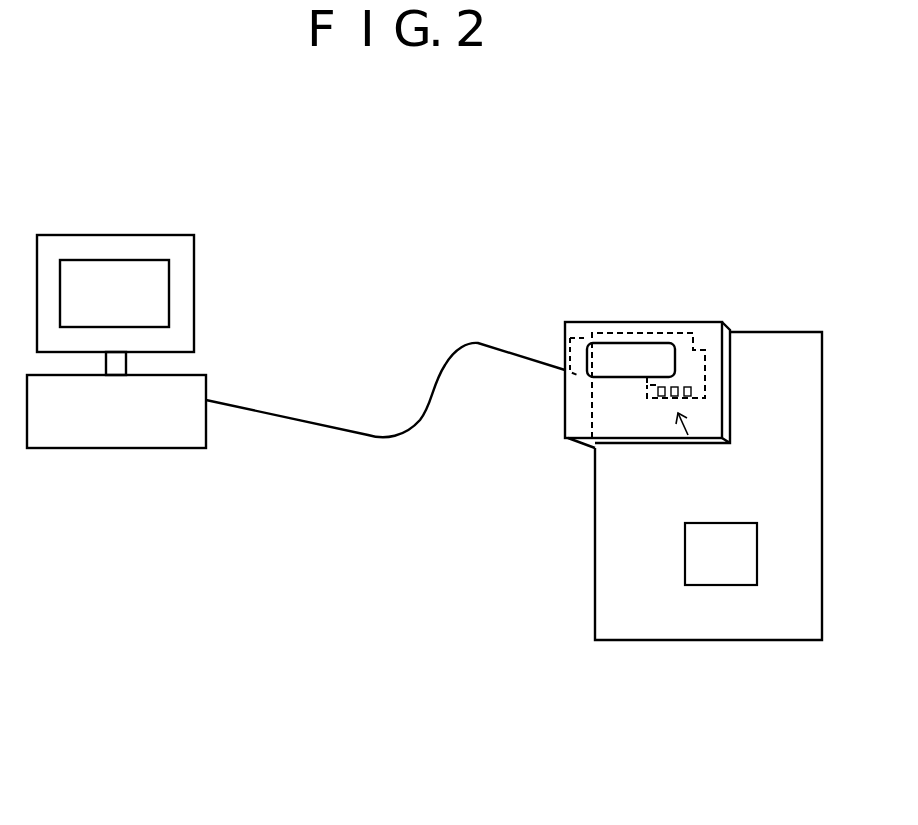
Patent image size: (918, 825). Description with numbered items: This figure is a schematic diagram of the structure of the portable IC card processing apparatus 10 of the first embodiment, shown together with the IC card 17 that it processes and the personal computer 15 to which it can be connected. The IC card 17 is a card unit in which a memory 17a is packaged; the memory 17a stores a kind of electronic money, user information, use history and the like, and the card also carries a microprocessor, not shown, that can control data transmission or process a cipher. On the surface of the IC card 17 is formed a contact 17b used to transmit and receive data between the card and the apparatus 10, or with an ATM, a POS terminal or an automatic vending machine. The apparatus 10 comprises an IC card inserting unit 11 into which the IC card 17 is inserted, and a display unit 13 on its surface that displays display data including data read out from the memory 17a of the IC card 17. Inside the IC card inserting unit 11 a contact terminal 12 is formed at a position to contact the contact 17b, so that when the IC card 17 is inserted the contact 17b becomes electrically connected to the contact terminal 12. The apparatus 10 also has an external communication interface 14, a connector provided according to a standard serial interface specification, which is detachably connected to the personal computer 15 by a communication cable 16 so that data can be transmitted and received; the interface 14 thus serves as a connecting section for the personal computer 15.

The IC card processing apparatus 10 is at (697, 345).
The IC card inserting unit 11 is at (587, 458).
The contact terminal 12 is at (686, 337).
The display unit 13 is at (632, 353).
The external communication interface 14 is at (565, 345).
The personal computer 15 is at (111, 465).
The communication cable 16 is at (298, 418).
The IC card 17 is at (574, 618).
The memory 17a is at (720, 575).
The contact 17b is at (690, 437).